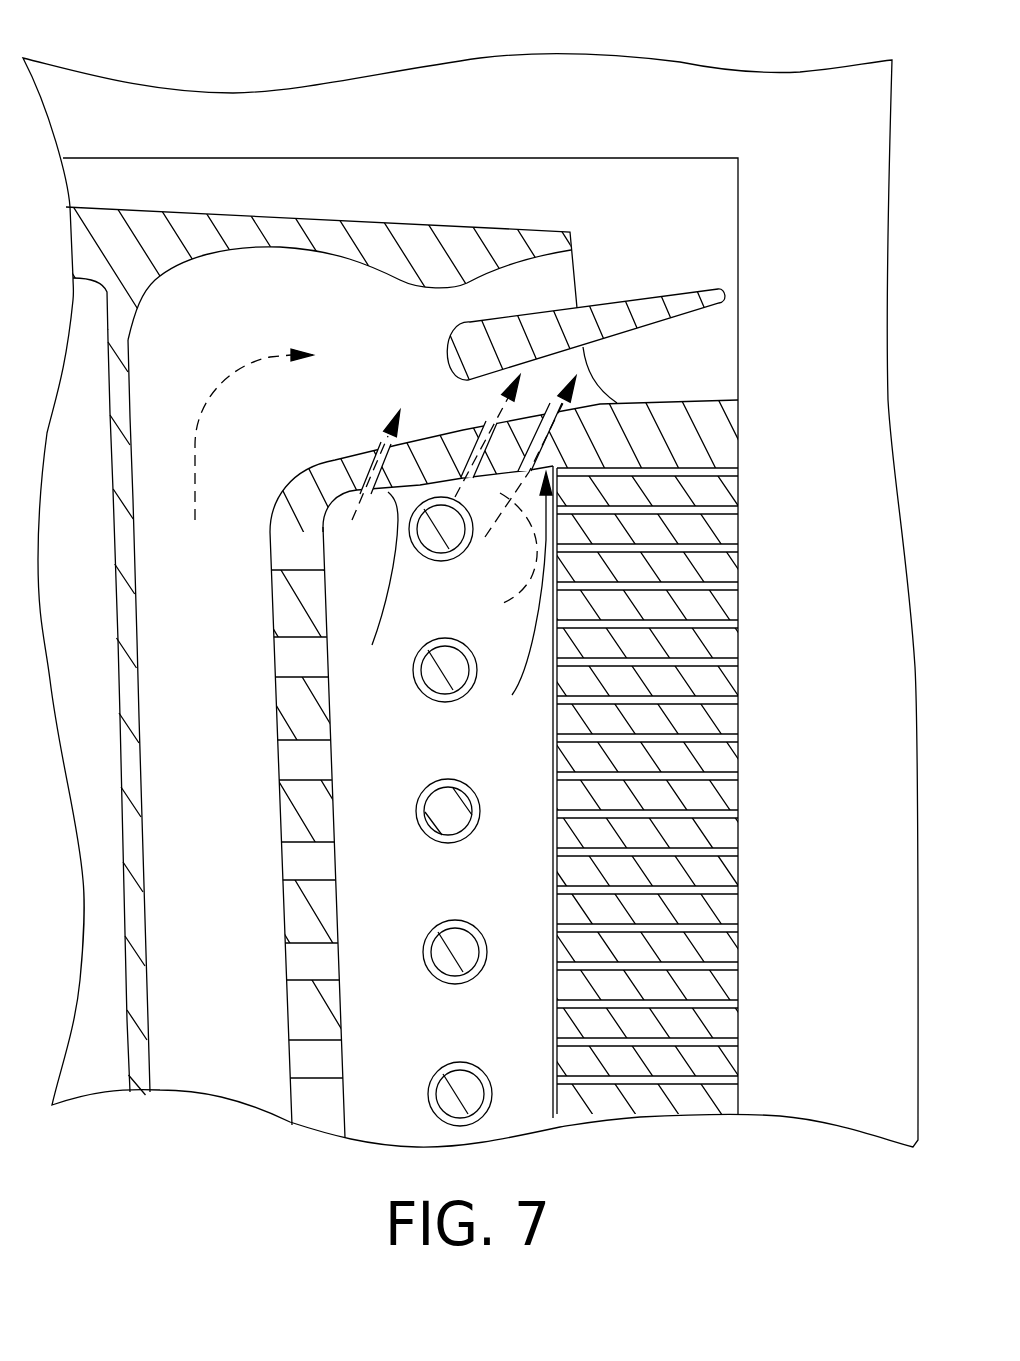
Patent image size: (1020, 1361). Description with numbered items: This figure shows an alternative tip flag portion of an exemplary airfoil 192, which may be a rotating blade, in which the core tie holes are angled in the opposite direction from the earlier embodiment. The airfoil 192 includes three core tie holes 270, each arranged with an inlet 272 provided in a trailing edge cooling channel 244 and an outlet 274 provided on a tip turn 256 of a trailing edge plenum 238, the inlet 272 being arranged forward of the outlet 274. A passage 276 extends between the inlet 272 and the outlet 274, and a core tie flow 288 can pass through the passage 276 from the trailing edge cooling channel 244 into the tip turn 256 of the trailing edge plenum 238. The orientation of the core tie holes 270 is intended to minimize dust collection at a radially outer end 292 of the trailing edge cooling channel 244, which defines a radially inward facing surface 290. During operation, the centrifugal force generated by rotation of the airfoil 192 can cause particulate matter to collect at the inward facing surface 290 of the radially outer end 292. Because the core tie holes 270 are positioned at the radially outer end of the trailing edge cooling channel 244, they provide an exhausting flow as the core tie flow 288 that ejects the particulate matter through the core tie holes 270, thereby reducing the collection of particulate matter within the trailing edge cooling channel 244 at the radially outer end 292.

The airfoil 192 is at (107, 41).
The trailing edge plenum 238 is at (238, 903).
The trailing edge cooling channel 244 is at (505, 1015).
The tip turn 256 is at (302, 294).
The core tie holes 270 is at (672, 383).
The inlet 272 is at (466, 500).
The outlet 274 is at (581, 347).
The passage 276 is at (393, 508).
The core tie flow 288 is at (344, 495).
The radially inward facing surface 290 is at (372, 585).
The radially outer end 292 is at (515, 596).